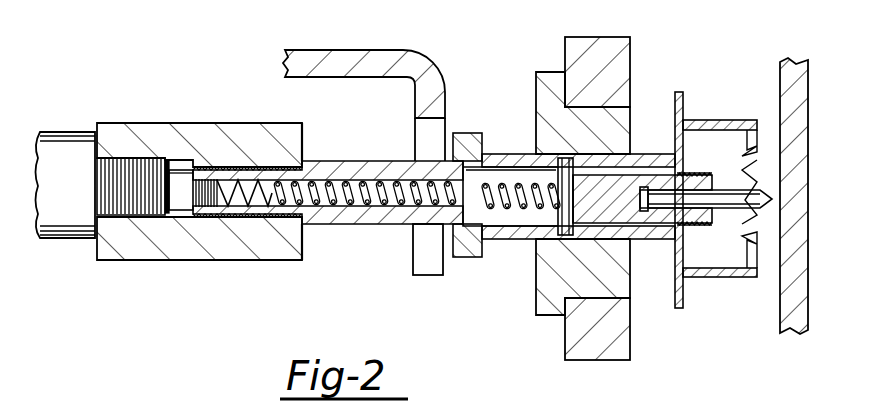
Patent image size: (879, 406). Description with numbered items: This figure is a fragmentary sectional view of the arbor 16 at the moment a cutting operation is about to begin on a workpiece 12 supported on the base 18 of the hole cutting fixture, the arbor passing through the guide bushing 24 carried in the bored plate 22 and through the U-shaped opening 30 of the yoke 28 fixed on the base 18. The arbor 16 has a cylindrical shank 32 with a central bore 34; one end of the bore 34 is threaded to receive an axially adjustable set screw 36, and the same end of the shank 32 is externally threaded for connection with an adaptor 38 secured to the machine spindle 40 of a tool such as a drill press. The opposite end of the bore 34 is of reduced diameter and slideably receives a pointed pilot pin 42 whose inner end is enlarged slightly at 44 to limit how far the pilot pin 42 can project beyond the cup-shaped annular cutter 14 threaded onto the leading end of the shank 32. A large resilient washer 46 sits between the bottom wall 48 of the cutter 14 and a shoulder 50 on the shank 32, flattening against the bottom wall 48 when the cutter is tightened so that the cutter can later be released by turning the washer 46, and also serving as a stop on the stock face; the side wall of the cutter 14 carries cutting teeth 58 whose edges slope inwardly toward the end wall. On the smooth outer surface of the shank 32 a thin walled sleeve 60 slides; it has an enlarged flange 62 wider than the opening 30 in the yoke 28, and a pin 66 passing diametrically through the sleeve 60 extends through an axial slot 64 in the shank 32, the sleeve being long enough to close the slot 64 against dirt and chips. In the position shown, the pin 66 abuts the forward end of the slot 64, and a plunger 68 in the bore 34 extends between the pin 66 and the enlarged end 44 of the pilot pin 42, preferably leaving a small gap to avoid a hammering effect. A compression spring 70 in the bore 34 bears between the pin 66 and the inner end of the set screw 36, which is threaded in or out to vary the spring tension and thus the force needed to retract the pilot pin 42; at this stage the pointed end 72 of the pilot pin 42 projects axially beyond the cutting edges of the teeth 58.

The workpiece 12 is at (808, 80).
The annular cutter 14 is at (708, 120).
The arbor 16 is at (350, 243).
The base 18 is at (305, 8).
The plate 22 is at (597, 37).
The guide bushing 24 is at (553, 72).
The yoke 28 is at (383, 58).
The U-shaped opening 30 is at (432, 273).
The cylindrical shank 32 is at (330, 162).
The central bore 34 is at (368, 187).
The set screw 36 is at (201, 182).
The adaptor 38 is at (177, 132).
The machine spindle 40 is at (57, 143).
The pilot pin 42 is at (670, 238).
The enlarged end 44 is at (645, 156).
The washer 46 is at (683, 100).
The bottom wall 48 is at (688, 243).
The shoulder 50 is at (684, 167).
The cutting teeth 58 is at (760, 154).
The sleeve 60 is at (500, 156).
The flange 62 is at (467, 133).
The slot 64 is at (510, 220).
The pin 66 is at (564, 240).
The plunger 68 is at (618, 228).
The compression spring 70 is at (398, 207).
The pointed end 72 is at (772, 201).